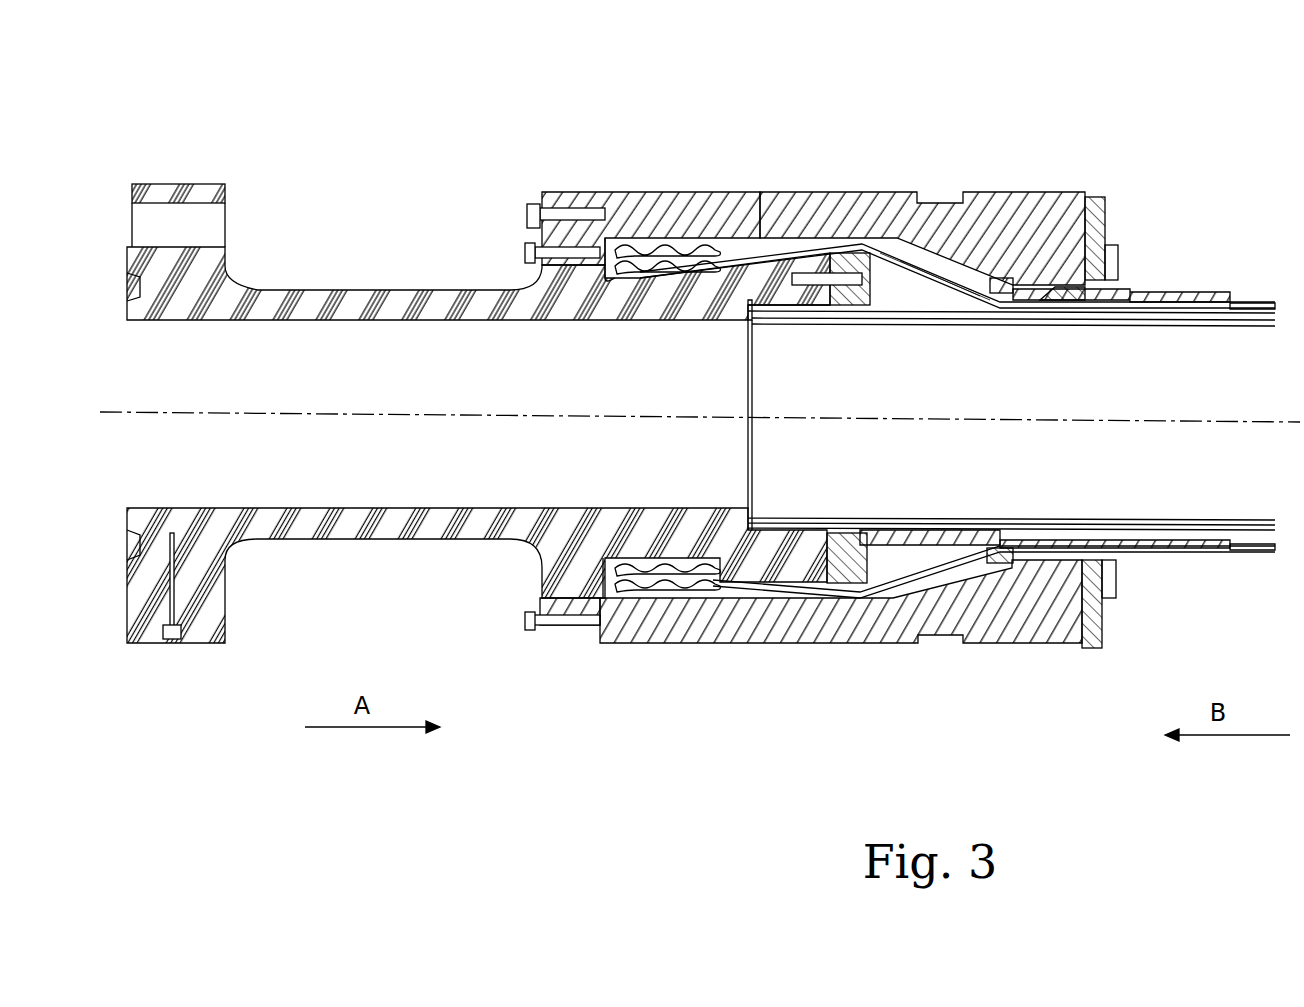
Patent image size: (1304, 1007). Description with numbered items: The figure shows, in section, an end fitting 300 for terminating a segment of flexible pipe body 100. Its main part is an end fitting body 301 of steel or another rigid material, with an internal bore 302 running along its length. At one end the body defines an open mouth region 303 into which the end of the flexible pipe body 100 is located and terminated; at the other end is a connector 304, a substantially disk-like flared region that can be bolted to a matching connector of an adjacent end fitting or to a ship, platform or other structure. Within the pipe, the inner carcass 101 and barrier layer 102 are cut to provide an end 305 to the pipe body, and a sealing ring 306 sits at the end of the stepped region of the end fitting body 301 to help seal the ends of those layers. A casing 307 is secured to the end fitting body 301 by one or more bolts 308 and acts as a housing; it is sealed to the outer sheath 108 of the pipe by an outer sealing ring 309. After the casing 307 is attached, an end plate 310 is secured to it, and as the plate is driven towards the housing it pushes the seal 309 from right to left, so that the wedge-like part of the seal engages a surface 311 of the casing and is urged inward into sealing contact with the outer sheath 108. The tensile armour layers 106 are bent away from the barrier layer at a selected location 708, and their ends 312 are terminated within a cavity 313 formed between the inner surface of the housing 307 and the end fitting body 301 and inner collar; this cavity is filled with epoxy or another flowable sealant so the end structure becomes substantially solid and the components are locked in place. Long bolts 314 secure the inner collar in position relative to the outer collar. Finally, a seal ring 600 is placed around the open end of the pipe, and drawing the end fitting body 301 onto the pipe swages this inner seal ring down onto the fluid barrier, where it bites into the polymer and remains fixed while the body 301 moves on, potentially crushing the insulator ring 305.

The end fitting 300 is at (520, 78).
The end fitting body 301 is at (332, 292).
The internal bore 302 is at (322, 405).
The open mouth region 303 is at (702, 369).
The connector 304 is at (226, 198).
The end 305 is at (758, 324).
The sealing ring 306 is at (730, 505).
The casing 307 is at (792, 628).
The bolts 308 is at (583, 626).
The outer sealing ring 309 is at (1096, 262).
The end plate 310 is at (1100, 630).
The surface 311 is at (1040, 284).
The ends 312 is at (640, 244).
The cavity 313 is at (900, 250).
The long bolts 314 is at (915, 540).
The seal ring 600 is at (812, 310).
The inner carcass 101 is at (920, 325).
The barrier layer 102 is at (772, 518).
The tensile armour layer 106 is at (1244, 302).
The outer sheath 108 is at (1128, 300).
The selected location 708 is at (1050, 332).
The flexible pipe body 100 is at (1276, 542).